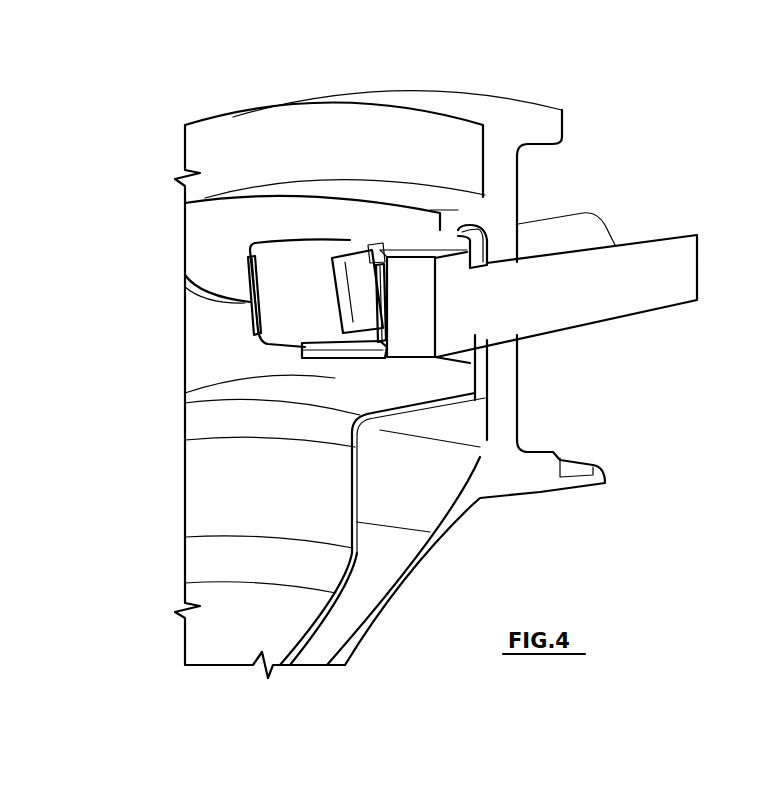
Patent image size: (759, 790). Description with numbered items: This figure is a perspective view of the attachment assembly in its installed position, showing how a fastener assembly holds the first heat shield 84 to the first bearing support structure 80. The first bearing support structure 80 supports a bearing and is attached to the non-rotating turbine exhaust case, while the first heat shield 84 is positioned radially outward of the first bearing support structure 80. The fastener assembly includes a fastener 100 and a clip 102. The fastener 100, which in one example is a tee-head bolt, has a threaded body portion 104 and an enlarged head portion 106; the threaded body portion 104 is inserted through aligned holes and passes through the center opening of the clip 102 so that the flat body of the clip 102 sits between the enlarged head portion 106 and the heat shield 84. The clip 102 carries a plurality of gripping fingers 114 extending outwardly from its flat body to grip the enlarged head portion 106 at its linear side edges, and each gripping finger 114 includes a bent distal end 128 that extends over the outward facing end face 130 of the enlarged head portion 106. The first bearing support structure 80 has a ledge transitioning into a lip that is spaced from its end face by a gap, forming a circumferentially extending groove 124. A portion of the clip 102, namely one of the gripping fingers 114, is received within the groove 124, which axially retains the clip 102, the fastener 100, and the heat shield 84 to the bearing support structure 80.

The first bearing support structure 80 is at (470, 110).
The first heat shield 84 is at (212, 523).
The fastener 100 is at (668, 237).
The clip 102 is at (363, 280).
The threaded body portion 104 is at (577, 233).
The enlarged head portion 106 is at (450, 338).
The gripping fingers 114 is at (365, 313).
The circumferentially extending groove 124 is at (460, 230).
The bent distal end 128 is at (335, 273).
The outward facing end face 130 is at (277, 280).